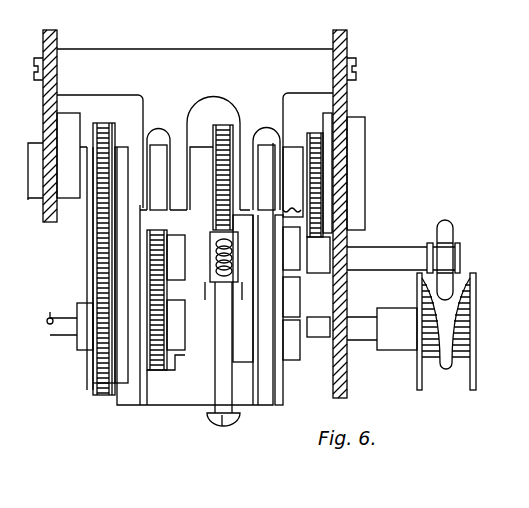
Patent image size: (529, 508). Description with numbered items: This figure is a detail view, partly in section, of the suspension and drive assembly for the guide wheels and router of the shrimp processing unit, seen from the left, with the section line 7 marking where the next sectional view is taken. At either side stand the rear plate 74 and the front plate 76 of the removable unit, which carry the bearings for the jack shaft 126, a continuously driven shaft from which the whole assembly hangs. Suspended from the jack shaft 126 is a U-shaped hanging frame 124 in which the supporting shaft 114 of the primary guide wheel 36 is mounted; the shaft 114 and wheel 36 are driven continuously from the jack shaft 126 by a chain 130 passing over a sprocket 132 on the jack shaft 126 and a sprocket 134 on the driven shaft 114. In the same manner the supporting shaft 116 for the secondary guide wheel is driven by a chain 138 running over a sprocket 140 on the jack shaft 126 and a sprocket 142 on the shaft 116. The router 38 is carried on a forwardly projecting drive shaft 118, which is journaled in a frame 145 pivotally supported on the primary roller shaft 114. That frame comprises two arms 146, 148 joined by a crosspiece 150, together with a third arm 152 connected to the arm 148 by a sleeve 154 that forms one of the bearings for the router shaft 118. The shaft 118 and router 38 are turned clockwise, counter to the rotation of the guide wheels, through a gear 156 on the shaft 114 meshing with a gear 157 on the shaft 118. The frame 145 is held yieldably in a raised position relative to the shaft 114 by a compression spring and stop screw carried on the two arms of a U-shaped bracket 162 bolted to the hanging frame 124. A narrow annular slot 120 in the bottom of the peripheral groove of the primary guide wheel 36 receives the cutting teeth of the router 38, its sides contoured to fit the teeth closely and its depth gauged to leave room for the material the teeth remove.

The section line 7— 7 is at (220, 35).
The primary guide wheel 36 is at (475, 392).
The router 38 is at (447, 262).
The rear plate 74 is at (43, 38).
The front plate 76 is at (348, 49).
The supporting shaft 114 is at (62, 336).
The supporting shaft 116 is at (18, 247).
The drive shaft 118 is at (396, 258).
The annular slot 120 is at (438, 372).
The U-shaped hanging frame 124 is at (113, 394).
The jack shaft 126 is at (34, 143).
The chain 130 is at (93, 238).
The sprocket 132 is at (114, 123).
The sprocket 134 is at (93, 382).
The chain 138 is at (226, 160).
The sprocket 140 is at (224, 157).
The sprocket 142 is at (47, 322).
The frame 145 is at (175, 406).
The arm 146 is at (178, 372).
The arm 148 is at (252, 354).
The crosspiece 150 is at (208, 290).
The third arm 152 is at (295, 360).
The sleeve 154 is at (348, 245).
The gear 156 is at (146, 365).
The gear 157 is at (148, 242).
The U-shaped bracket 162 is at (222, 398).